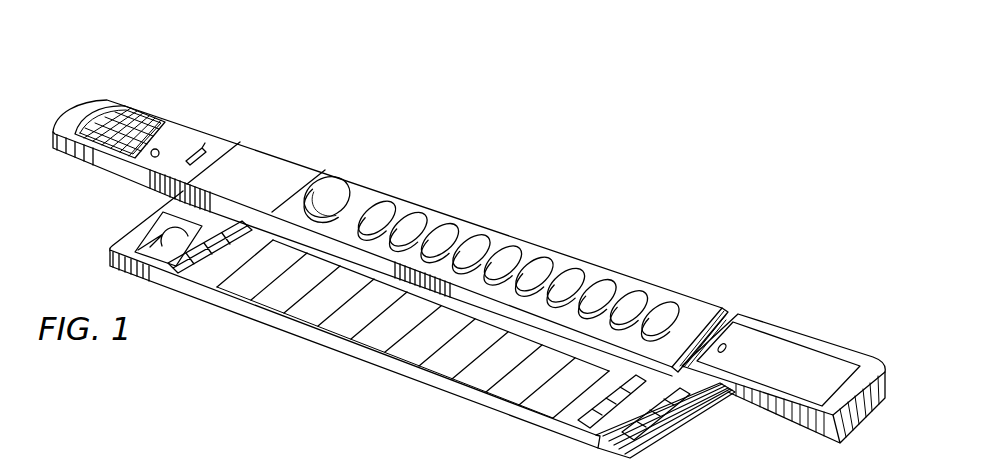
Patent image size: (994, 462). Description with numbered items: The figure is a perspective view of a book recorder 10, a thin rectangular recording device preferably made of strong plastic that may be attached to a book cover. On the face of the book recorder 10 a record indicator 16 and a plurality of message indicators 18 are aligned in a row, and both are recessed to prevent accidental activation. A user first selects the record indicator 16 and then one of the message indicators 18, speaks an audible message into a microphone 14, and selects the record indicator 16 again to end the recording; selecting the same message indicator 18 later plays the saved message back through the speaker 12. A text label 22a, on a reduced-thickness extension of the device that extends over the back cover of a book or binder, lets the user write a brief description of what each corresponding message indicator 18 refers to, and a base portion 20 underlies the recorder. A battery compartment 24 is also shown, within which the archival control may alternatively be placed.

The book recorder 10 is at (359, 92).
The speaker 12 is at (158, 121).
The microphone 14 is at (206, 149).
The record indicator 16 is at (343, 182).
The message indicators 18 is at (412, 213).
The base tray 20 is at (207, 278).
The numbered label strip 22a is at (332, 303).
The battery compartment 24 is at (750, 338).